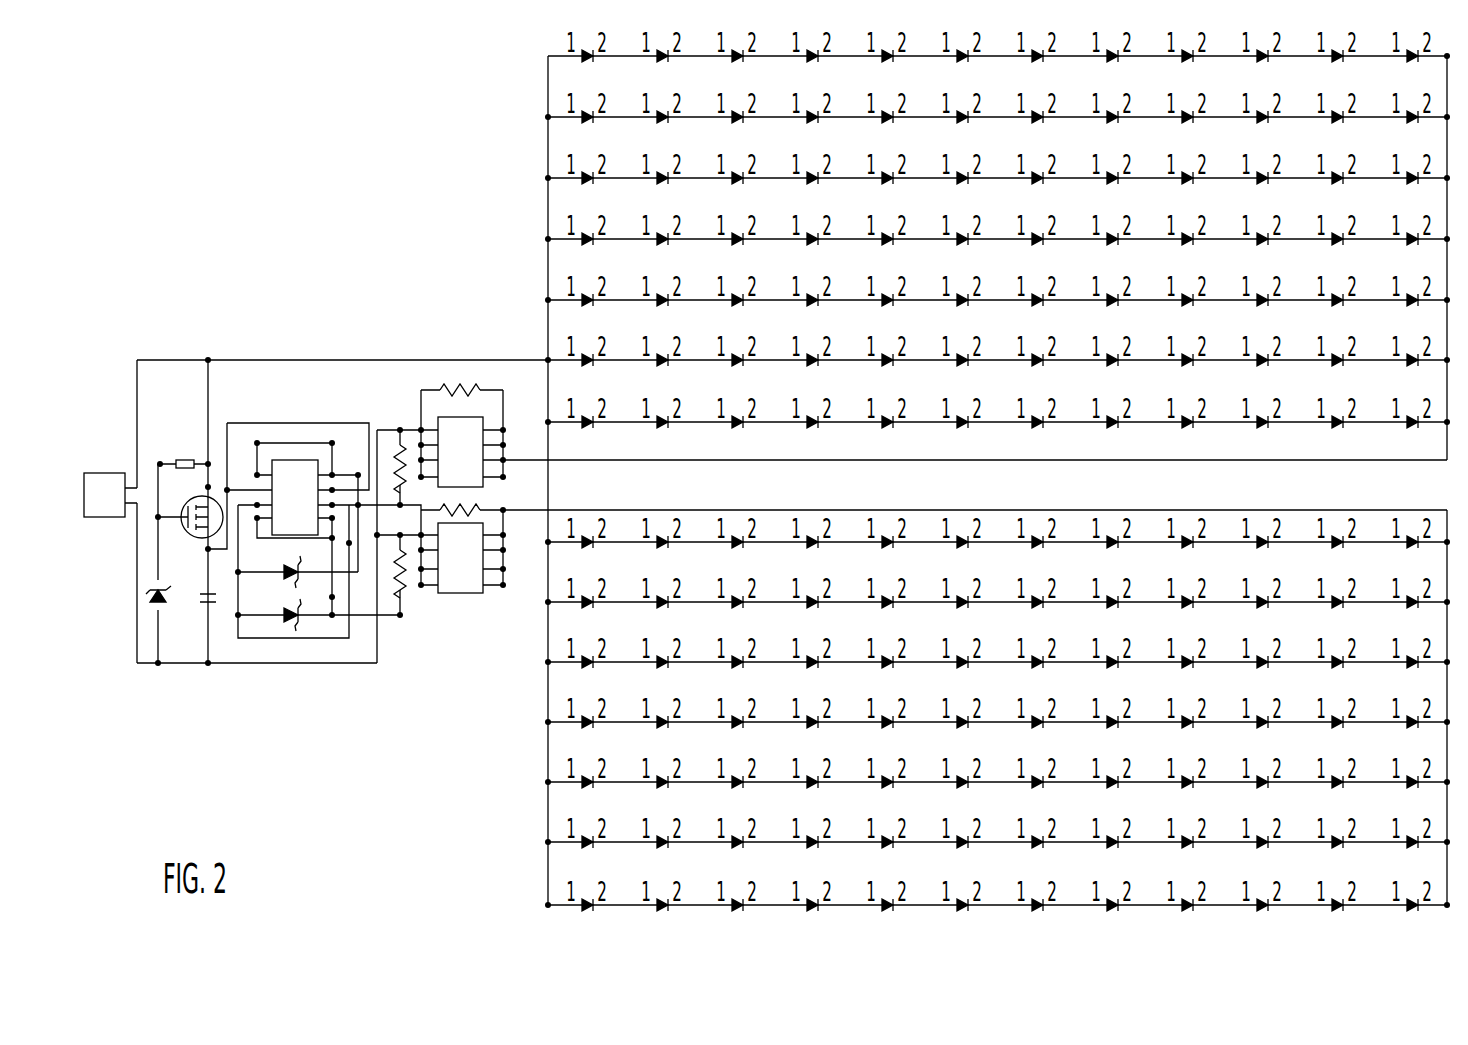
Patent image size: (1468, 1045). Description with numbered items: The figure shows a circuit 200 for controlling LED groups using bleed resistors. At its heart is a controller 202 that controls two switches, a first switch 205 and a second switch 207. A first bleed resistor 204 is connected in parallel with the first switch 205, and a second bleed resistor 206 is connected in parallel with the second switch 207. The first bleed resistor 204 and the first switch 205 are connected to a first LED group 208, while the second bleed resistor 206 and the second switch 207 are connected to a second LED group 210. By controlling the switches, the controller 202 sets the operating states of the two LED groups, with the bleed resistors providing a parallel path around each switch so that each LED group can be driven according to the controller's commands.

The lighting system 200 is at (316, 394).
The controller 202 is at (304, 465).
The first bleed resistor 204 is at (455, 340).
The first switch 205 is at (932, 386).
The second bleed resistor 206 is at (456, 589).
The second switch 207 is at (923, 594).
The first LED group 208 is at (932, 466).
The second LED group 210 is at (929, 727).